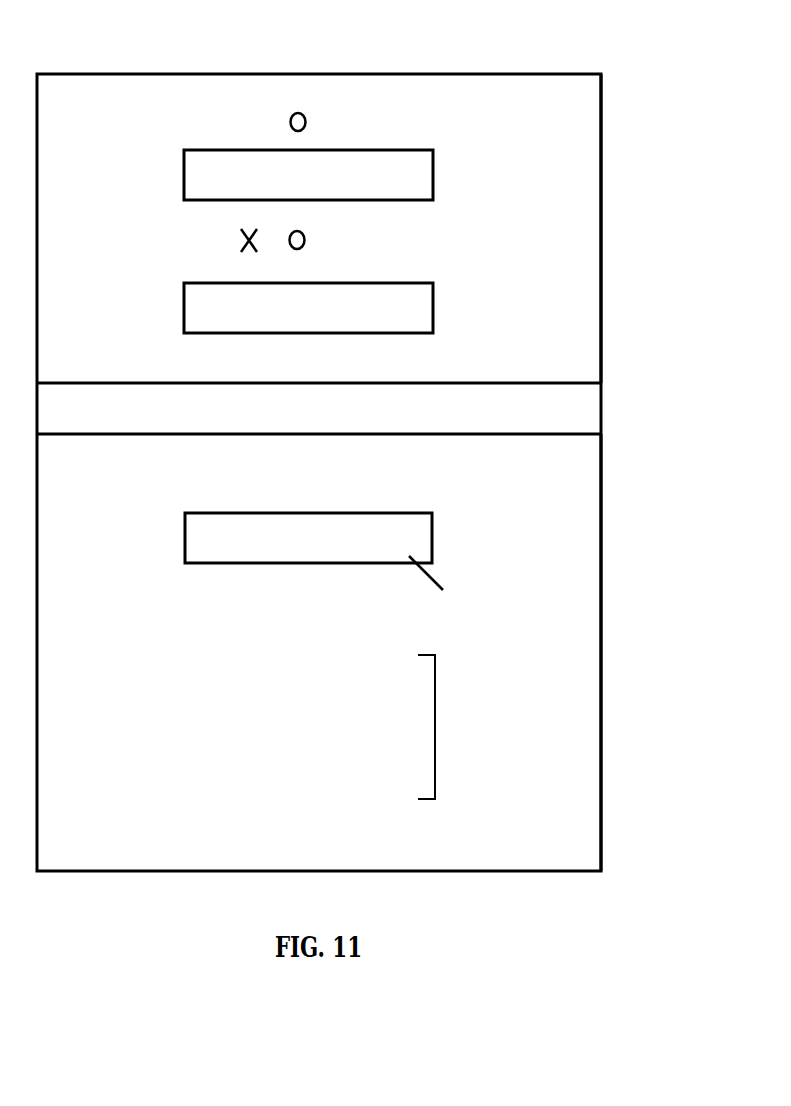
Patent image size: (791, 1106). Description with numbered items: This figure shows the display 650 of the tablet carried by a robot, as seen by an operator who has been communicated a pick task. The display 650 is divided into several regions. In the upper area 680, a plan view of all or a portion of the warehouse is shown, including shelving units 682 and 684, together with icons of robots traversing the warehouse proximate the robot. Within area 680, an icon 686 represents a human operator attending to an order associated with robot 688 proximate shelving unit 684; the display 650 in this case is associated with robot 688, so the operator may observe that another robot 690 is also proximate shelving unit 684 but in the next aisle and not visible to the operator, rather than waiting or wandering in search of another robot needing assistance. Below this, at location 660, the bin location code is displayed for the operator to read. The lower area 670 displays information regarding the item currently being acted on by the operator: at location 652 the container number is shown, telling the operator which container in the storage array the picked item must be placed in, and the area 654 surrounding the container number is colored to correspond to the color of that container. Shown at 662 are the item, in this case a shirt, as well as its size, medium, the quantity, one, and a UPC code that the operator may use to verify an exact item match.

The display 650 is at (455, 73).
The area 680 is at (587, 199).
The shelving unit 682 is at (434, 165).
The shelving unit 684 is at (434, 298).
The icon 686 is at (241, 240).
The robot 688 is at (305, 239).
The robot 690 is at (306, 121).
The location 660 is at (587, 408).
The area 670 is at (587, 827).
The location 652 is at (433, 528).
The area 654 is at (448, 589).
The item information 662 is at (436, 685).